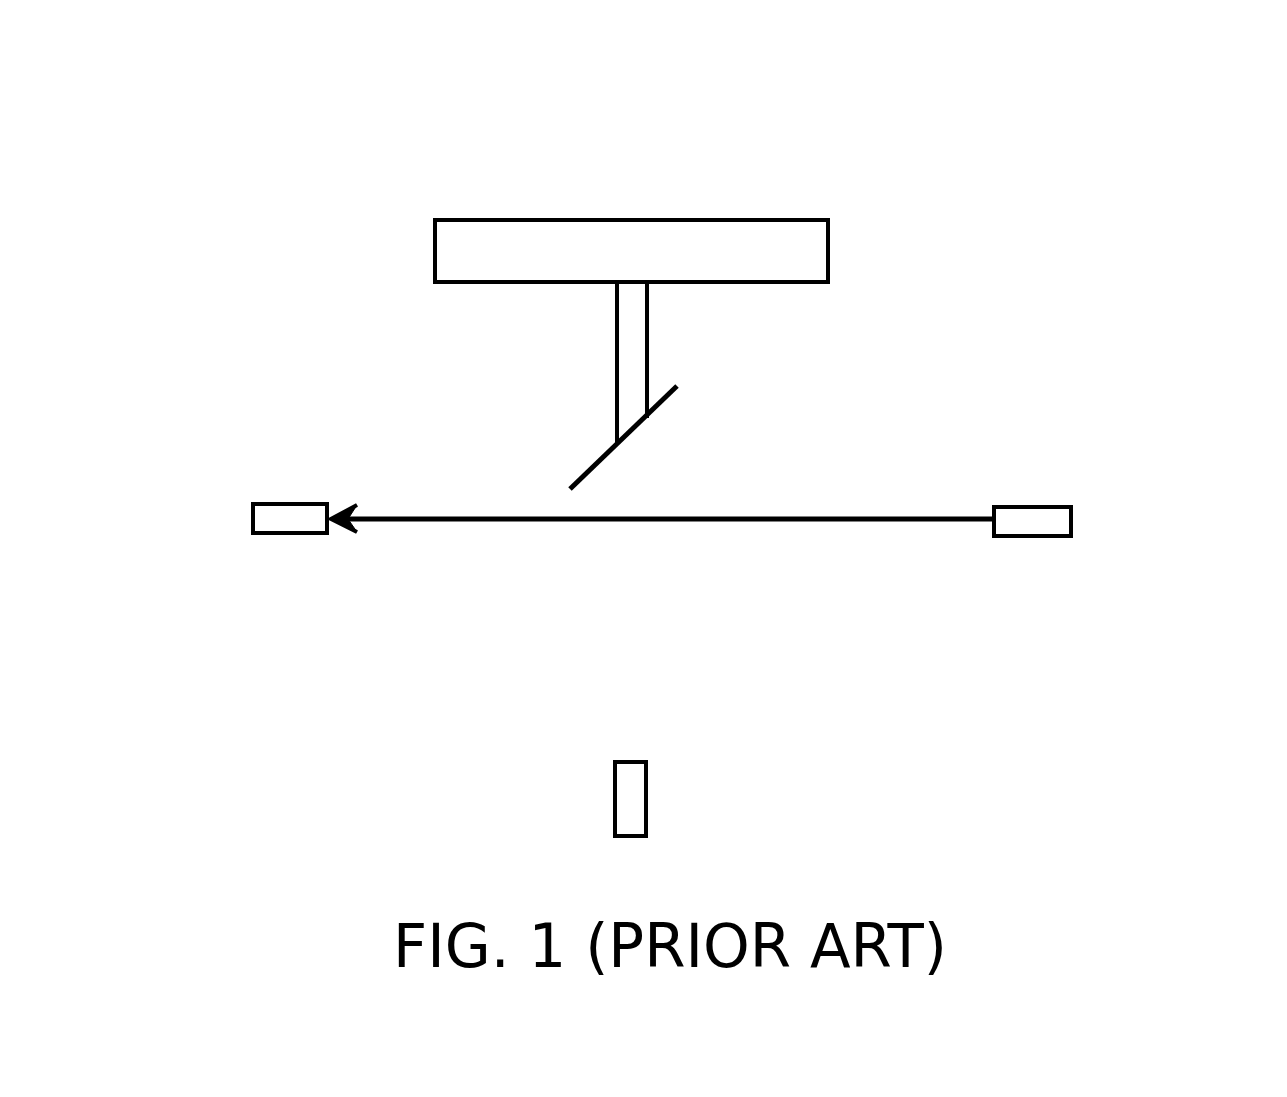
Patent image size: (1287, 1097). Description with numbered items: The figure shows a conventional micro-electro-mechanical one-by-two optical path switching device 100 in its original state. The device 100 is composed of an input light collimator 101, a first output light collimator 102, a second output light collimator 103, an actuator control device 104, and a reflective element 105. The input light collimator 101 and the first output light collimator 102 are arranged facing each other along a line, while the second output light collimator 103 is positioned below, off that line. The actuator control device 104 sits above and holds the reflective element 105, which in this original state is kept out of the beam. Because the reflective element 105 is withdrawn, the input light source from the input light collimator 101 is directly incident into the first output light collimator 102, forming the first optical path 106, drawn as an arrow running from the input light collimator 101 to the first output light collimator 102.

The micro-electro-mechanical 1×2 optical path switching device 100 is at (1118, 148).
The input light collimator 101 is at (1043, 505).
The first output light collimator 102 is at (282, 502).
The second output light collimator 103 is at (648, 807).
The actuator control device 104 is at (631, 218).
The reflective element 105 is at (661, 396).
The first optical path 106 is at (812, 517).